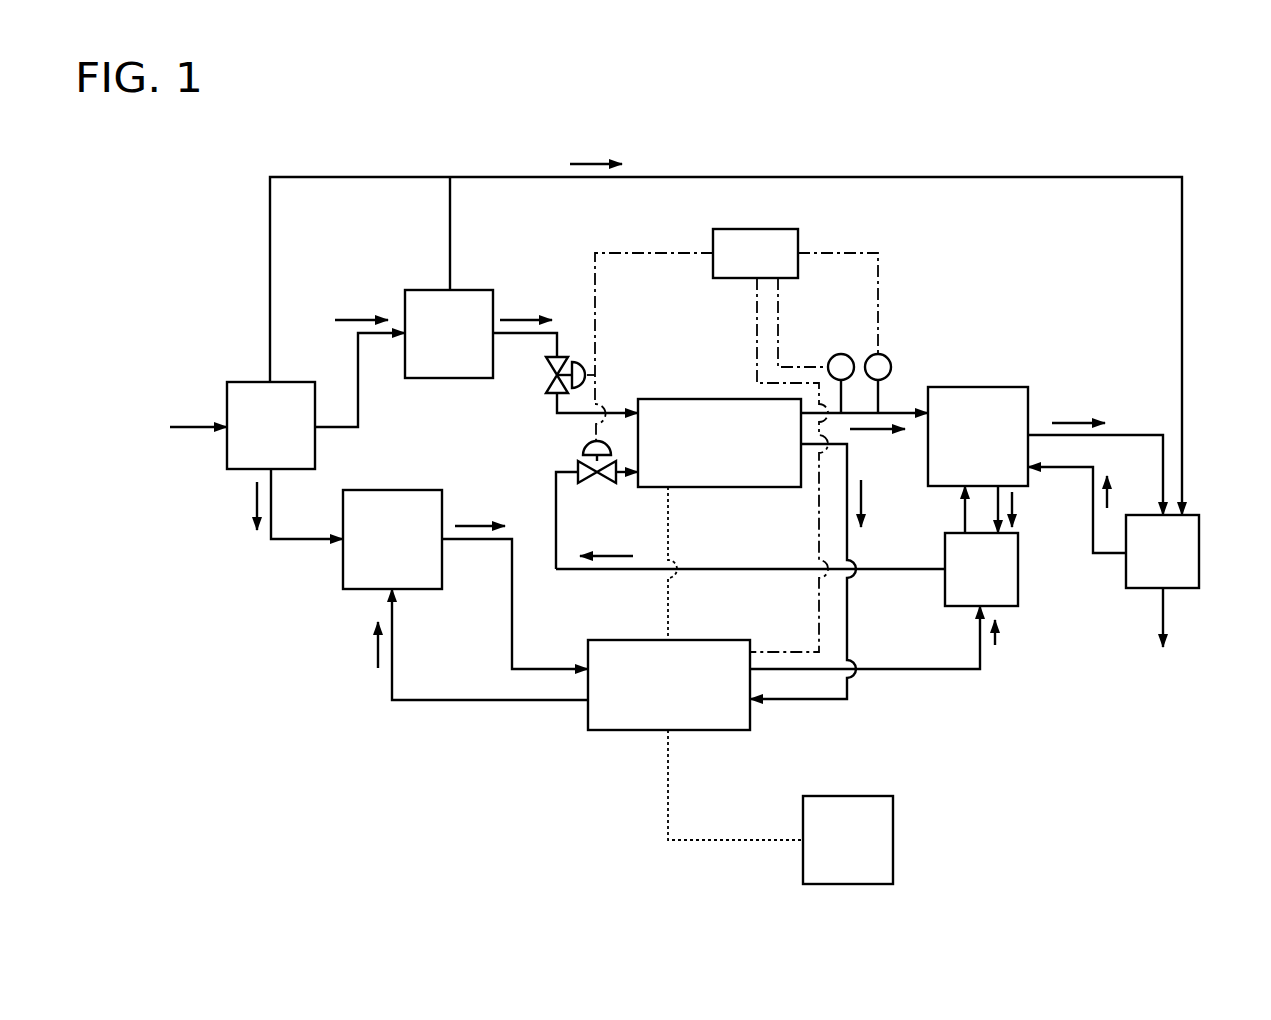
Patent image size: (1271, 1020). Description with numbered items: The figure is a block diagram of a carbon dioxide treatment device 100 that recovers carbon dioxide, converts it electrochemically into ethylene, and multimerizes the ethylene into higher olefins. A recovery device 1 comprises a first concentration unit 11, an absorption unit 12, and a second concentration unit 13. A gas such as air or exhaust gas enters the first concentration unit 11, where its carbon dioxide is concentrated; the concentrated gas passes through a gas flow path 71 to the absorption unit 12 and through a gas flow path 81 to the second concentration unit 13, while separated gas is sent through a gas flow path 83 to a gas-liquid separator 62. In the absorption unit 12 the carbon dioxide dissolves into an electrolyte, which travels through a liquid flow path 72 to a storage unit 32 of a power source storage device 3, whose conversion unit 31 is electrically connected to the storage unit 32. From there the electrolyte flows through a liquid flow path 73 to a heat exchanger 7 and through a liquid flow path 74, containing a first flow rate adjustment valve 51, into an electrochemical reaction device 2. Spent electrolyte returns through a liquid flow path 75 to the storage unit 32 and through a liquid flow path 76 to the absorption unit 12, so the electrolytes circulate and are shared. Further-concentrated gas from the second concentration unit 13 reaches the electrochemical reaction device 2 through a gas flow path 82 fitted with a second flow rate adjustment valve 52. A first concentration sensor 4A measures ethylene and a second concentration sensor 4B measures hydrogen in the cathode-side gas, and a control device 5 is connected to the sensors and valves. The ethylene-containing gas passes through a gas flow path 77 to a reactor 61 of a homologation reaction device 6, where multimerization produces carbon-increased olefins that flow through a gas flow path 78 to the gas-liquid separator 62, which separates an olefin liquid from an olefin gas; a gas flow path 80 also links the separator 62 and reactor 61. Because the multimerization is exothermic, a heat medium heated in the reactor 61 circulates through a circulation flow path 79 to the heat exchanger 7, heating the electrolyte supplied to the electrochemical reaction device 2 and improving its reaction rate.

The carbon dioxide treatment device 100 is at (716, 140).
The recovery device 1 is at (224, 272).
The first concentration unit 11 is at (240, 382).
The absorption unit 12 is at (420, 490).
The second concentration unit 13 is at (470, 290).
The electrochemical reaction device 2 is at (718, 399).
The power source storage device 3 is at (626, 764).
The conversion unit 31 is at (845, 796).
The storage unit 32 is at (588, 718).
The first concentration sensor 4A is at (836, 355).
The second concentration sensor 4B is at (884, 355).
The control device 5 is at (810, 229).
The first flow rate adjustment valve 51 is at (592, 447).
The second flow rate adjustment valve 52 is at (577, 358).
The homologation reaction device 6 is at (1072, 346).
The reactor 61 is at (975, 387).
The gas-liquid separator 62 is at (1185, 515).
The heat exchanger 7 is at (1018, 590).
The gas flow path 71 is at (298, 542).
The liquid flow path 72 is at (512, 600).
The liquid flow path 73 is at (957, 672).
The liquid flow path 74 is at (735, 569).
The liquid flow path 75 is at (850, 612).
The liquid flow path 76 is at (465, 702).
The gas flow path 77 is at (895, 413).
The gas flow path 78 is at (1135, 435).
The circulation flow path 79 is at (963, 512).
The gas flow path 80 is at (1108, 556).
The gas flow path 81 is at (358, 392).
The gas flow path 82 is at (527, 336).
The gas flow path 83 is at (965, 177).